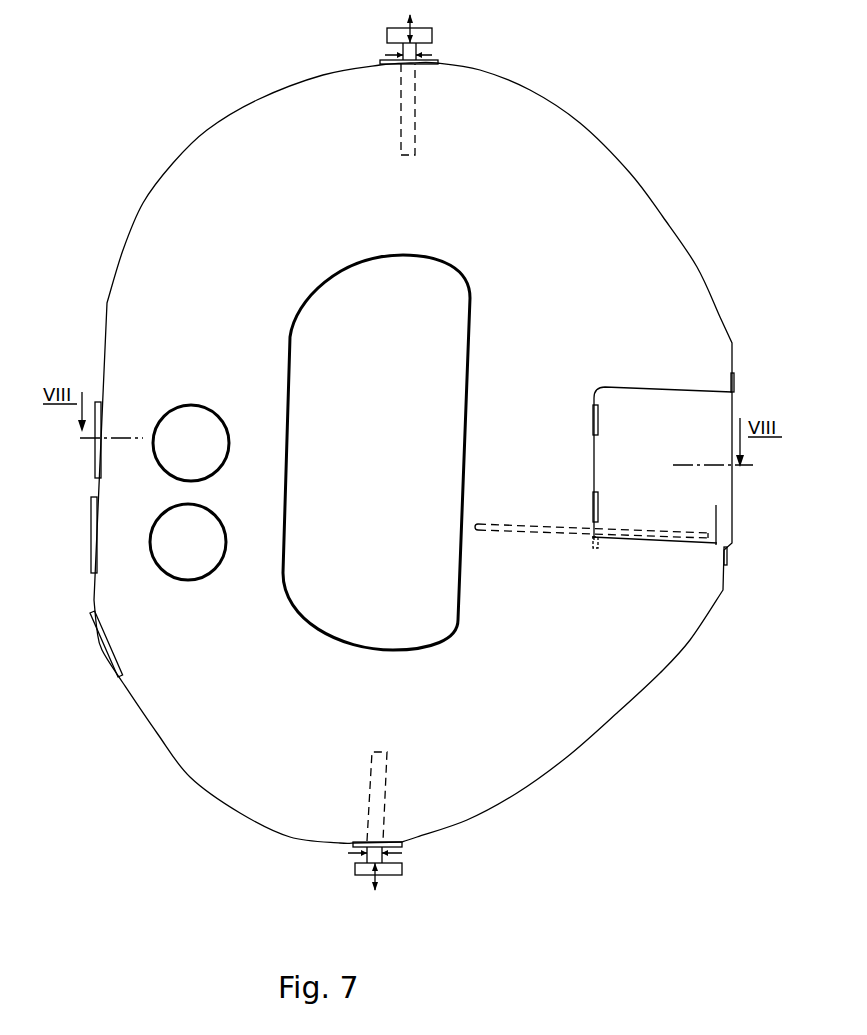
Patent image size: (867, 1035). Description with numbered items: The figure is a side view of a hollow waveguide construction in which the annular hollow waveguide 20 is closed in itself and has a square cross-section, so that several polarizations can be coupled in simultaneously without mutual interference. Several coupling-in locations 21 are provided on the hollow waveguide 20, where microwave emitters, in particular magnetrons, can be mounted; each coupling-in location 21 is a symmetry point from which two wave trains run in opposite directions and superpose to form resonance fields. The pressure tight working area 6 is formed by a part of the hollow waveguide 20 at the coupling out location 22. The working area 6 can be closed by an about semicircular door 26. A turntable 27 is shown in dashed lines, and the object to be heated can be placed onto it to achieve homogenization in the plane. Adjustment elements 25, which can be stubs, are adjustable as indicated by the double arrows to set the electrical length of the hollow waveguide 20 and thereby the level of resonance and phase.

The annular hollow waveguide 20 is at (575, 730).
The coupling-in location 21 is at (102, 423).
The coupling out location 22 is at (675, 342).
The locking bolt 25 is at (410, 133).
The semicircular door 26 is at (717, 510).
The turntable 27 is at (557, 537).
The working area 6 is at (658, 515).